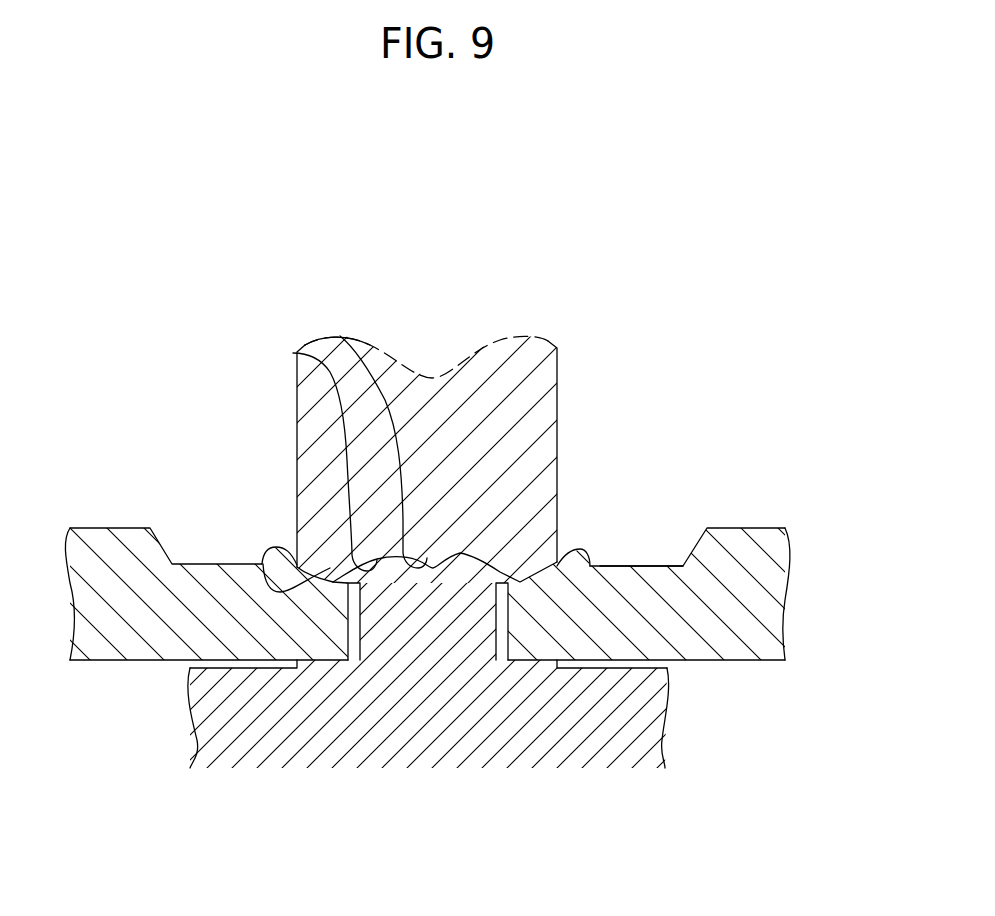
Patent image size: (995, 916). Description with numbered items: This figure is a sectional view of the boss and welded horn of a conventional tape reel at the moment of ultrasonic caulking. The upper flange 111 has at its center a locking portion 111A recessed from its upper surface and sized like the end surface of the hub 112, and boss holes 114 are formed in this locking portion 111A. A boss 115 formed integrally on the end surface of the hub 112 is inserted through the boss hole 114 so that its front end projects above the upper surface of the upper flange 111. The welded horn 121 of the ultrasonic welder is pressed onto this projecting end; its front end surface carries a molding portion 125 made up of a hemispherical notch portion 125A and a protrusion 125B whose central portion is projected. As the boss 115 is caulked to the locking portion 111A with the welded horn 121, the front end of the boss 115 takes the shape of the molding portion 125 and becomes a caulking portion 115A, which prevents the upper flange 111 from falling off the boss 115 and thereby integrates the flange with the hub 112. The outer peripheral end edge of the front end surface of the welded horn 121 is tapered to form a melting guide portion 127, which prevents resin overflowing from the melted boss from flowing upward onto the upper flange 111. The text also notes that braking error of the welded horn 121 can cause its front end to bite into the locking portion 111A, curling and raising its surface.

The upper flange 111 is at (700, 653).
The locking portion 111A is at (640, 566).
The hub 112 is at (227, 757).
The boss hole 114 is at (370, 640).
The boss 115 is at (500, 643).
The caulking portion 115A is at (483, 566).
The welded horn 121 is at (540, 382).
The molding portion 125 is at (183, 300).
The hemispherical notch portion 125A is at (293, 353).
The protrusion 125B is at (375, 354).
The melting guide portion 127 is at (257, 558).